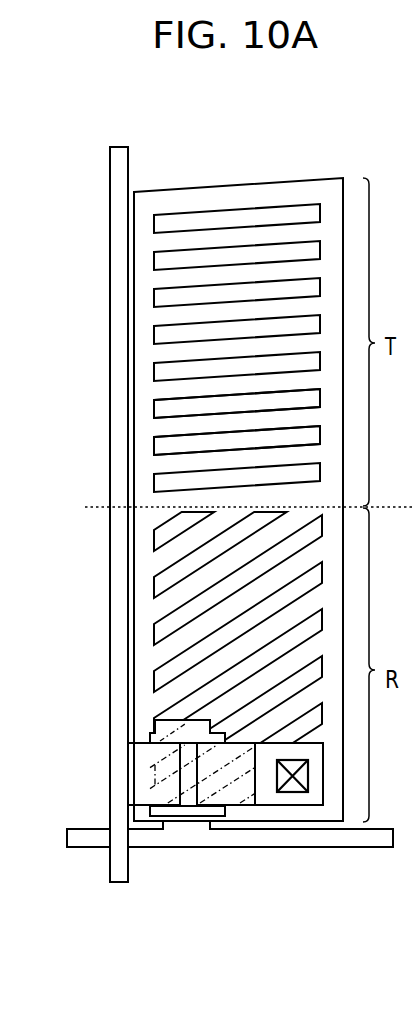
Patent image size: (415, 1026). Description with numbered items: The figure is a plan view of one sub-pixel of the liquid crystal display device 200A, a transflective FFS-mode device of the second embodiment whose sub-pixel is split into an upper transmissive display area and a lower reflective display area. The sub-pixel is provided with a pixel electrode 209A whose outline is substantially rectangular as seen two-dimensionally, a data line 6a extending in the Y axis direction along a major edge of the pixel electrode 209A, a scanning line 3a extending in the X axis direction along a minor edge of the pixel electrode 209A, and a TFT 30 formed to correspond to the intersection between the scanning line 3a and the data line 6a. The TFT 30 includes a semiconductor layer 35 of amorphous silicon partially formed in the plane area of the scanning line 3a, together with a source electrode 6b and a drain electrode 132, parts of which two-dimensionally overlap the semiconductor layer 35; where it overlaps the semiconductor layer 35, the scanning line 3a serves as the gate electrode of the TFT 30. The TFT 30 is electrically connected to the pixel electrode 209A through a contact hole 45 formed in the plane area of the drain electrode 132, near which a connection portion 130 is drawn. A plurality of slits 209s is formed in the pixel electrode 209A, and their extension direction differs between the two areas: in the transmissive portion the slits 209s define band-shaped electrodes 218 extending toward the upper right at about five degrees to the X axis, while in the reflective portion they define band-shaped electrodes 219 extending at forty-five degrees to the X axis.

The liquid crystal display device 200A is at (362, 121).
The pixel electrode 209A is at (183, 193).
The band-shaped electrodes 218 is at (196, 281).
The slits 209s is at (181, 450).
The band-shaped electrodes 219 is at (207, 622).
The connection electrode 130 is at (186, 721).
The data line 6a is at (112, 206).
The source electrode 6b is at (153, 765).
The drain electrode 132 is at (264, 800).
The contact hole 45 is at (299, 793).
The semiconductor layer 35 is at (173, 812).
The TFT 30 is at (216, 856).
The scanning line 3a is at (375, 844).